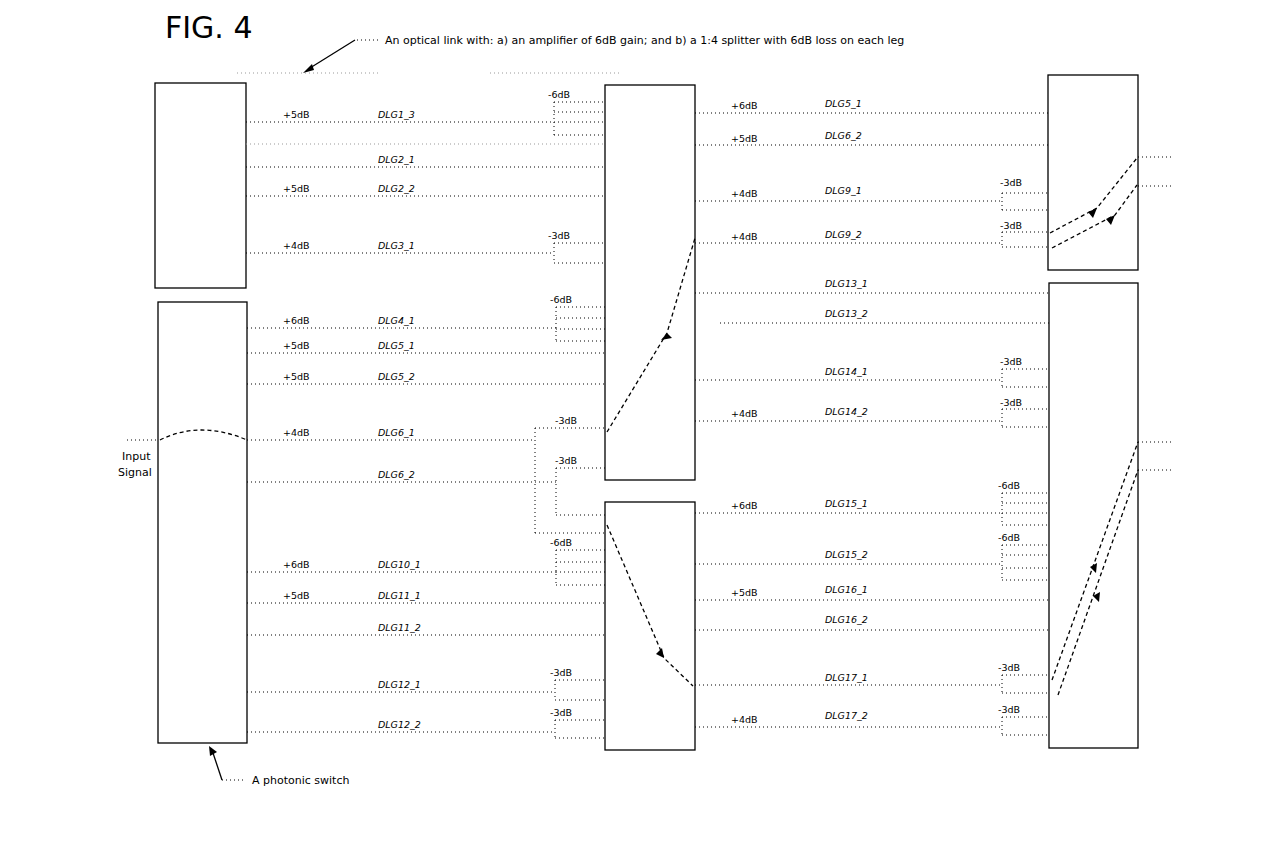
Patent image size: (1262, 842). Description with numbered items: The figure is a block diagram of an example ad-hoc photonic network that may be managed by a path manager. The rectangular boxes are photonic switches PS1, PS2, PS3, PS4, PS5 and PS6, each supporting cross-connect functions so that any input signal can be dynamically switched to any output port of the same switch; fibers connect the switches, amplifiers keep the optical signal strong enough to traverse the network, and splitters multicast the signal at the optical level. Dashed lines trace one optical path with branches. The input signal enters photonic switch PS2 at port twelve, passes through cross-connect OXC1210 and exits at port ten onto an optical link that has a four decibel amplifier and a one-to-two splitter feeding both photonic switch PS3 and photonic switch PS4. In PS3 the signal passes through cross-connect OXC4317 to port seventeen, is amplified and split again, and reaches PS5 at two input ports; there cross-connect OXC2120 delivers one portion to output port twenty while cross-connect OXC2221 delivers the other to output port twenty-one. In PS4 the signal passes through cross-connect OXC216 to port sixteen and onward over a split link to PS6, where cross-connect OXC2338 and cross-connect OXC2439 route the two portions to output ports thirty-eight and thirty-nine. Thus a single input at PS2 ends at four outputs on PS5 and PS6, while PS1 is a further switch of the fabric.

The photonic switch PS1 is at (200, 185).
The photonic switch PS2 is at (202, 522).
The photonic switch PS3 is at (650, 282).
The photonic switch PS4 is at (650, 626).
The photonic switch PS5 is at (1131, 172).
The photonic switch PS6 is at (1130, 515).
The optical cross-connect OXC1210 is at (188, 422).
The optical cross-connect OXC4317 is at (668, 335).
The optical cross-connect OXC216 is at (664, 660).
The optical cross-connect OXC2120 is at (1097, 210).
The optical cross-connect OXC2221 is at (1115, 217).
The optical cross-connect OXC2338 is at (1099, 566).
The optical cross-connect OXC2439 is at (1102, 594).